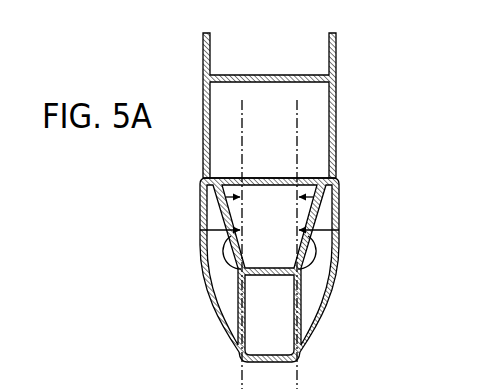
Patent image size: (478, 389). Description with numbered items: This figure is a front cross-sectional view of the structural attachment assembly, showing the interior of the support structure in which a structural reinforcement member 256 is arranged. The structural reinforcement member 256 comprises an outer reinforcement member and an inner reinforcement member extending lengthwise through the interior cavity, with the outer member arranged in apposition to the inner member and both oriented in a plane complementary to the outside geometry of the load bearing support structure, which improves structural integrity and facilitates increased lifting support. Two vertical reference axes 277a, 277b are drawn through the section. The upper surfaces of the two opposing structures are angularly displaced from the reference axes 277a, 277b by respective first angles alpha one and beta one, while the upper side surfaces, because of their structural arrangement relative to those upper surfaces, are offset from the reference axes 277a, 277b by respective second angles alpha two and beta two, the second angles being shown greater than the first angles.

The structural reinforcement member 256 is at (358, 171).
The reference axis 277a is at (240, 388).
The reference axis 277b is at (300, 388).